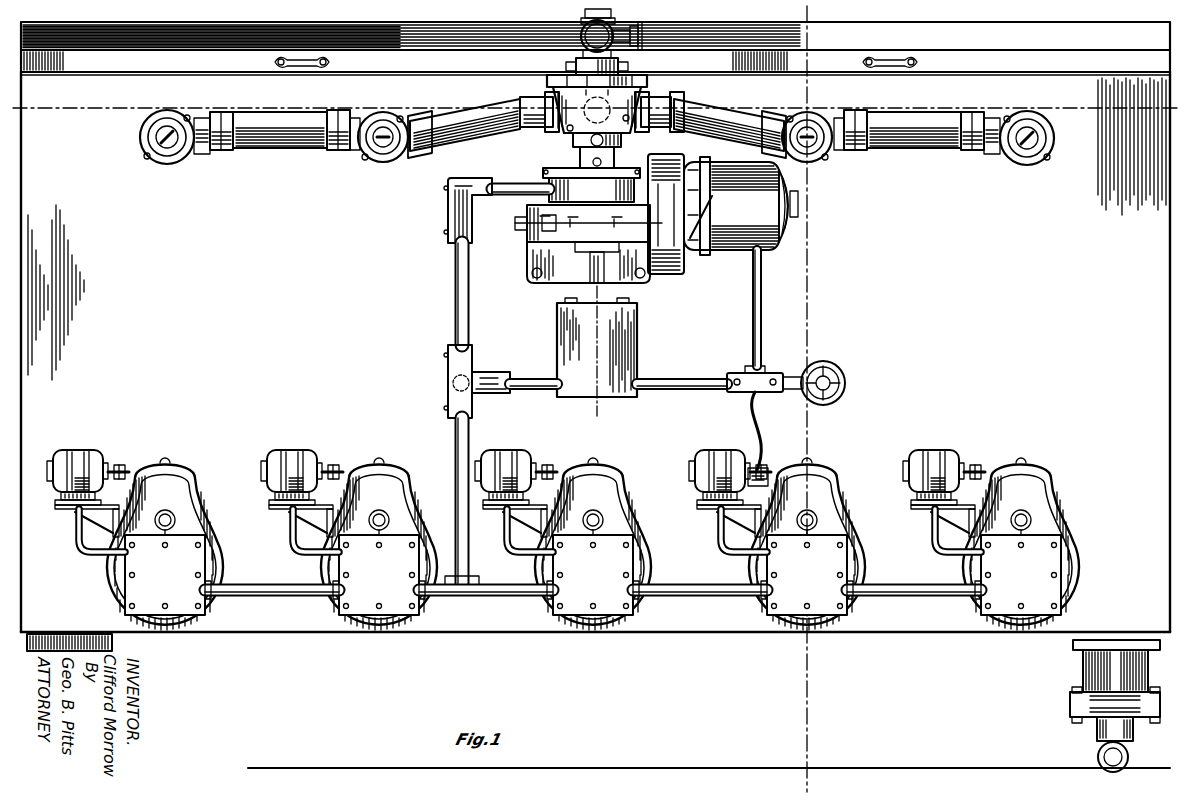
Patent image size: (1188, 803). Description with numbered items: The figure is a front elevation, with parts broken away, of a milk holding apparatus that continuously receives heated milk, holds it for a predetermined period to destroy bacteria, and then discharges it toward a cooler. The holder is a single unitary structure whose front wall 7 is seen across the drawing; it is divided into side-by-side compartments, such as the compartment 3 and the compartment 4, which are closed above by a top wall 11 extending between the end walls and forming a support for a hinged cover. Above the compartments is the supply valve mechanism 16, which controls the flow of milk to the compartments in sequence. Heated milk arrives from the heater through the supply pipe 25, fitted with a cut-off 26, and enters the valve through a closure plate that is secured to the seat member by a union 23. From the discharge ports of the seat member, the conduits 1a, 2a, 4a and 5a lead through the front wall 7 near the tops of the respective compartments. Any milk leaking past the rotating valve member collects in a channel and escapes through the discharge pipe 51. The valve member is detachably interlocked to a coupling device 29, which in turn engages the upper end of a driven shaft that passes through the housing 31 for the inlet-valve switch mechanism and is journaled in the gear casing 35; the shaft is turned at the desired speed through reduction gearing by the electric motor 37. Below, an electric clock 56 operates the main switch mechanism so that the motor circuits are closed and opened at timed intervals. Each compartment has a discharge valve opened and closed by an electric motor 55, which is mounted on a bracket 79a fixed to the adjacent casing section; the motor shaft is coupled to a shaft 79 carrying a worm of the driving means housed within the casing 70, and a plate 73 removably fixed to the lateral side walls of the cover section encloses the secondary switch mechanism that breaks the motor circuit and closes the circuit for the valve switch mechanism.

The top wall 11 is at (595, 327).
The front wall 7 is at (597, 229).
The compartment 3 is at (13, 98).
The compartment 4 is at (790, 14).
The conduit 1a is at (266, 146).
The conduit 2a is at (412, 147).
The conduit 4a is at (748, 140).
The conduit 5a is at (900, 140).
The valve mechanism 16 is at (578, 411).
The union 23 is at (548, 80).
The supply pipe 25 is at (576, 64).
The cut-off 26 is at (612, 25).
The coupling device 29 is at (610, 168).
The housing 31 is at (566, 185).
The gear casing 35 is at (527, 242).
The electric motor 37 is at (728, 255).
The discharge pipe 51 is at (582, 151).
The electric clock 56 is at (558, 350).
The electric motor 55 is at (103, 448).
The casing 70 is at (208, 606).
The plate 73 is at (180, 600).
The shaft 79 is at (350, 470).
The bracket 79a is at (305, 520).